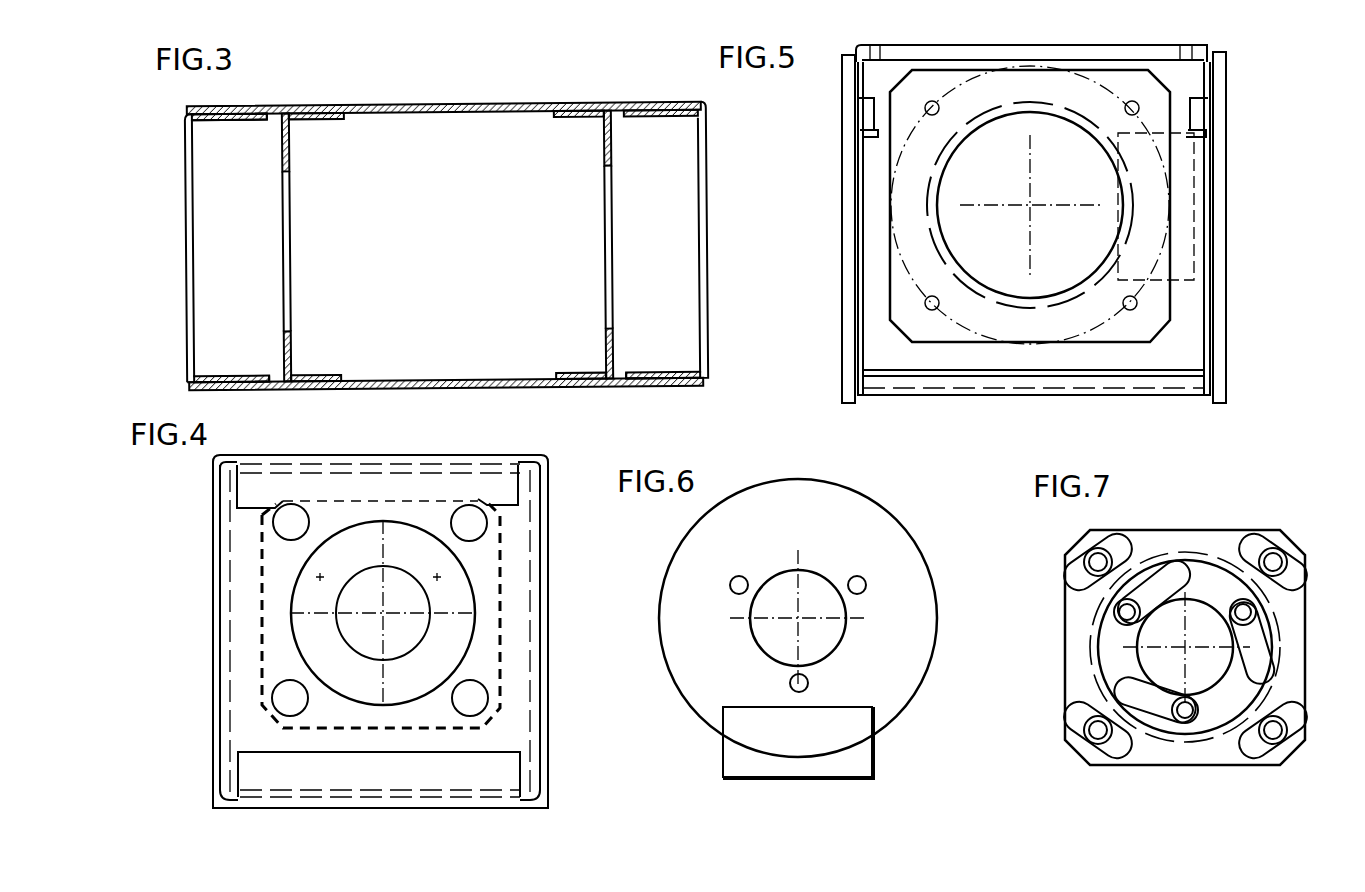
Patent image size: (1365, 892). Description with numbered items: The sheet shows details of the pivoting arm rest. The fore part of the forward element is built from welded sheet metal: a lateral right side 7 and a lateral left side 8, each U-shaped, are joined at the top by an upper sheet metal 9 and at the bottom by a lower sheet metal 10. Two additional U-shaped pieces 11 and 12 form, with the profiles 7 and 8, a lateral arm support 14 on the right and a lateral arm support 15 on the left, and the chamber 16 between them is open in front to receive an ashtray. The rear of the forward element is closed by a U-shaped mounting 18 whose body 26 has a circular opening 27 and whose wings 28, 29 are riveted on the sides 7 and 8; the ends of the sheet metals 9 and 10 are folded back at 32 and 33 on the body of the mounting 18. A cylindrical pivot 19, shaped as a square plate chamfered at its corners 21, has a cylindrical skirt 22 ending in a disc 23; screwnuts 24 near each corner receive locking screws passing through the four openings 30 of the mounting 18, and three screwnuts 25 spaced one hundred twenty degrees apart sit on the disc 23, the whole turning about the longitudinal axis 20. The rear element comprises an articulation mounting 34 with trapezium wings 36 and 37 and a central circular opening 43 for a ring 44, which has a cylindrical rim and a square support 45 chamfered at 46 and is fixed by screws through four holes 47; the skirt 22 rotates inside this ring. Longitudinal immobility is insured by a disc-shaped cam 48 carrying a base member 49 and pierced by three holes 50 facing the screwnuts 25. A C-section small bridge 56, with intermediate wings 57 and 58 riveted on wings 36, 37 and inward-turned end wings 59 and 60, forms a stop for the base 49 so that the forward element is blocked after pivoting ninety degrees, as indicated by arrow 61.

In FIG. 3, the lateral right side 7 is at (612, 148).
In FIG. 4, the lateral right side 7 is at (214, 650).
In FIG. 3, the lateral left side 8 is at (290, 152).
In FIG. 4, the lateral left side 8 is at (548, 604).
In FIG. 3, the upper sheet metal 9 is at (456, 104).
In FIG. 4, the upper sheet metal 9 is at (342, 462).
In FIG. 3, the lower sheet metal 10 is at (446, 372).
In FIG. 4, the lower sheet metal 10 is at (366, 808).
In FIG. 3, the additional welded sheet metal piece 11 is at (707, 174).
In FIG. 3, the additional welded sheet metal piece 12 is at (186, 205).
In FIG. 3, the lateral arm support 14 is at (641, 254).
In FIG. 3, the lateral arm support 15 is at (222, 257).
In FIG. 3, the chamber 16 is at (429, 257).
In FIG. 4, the U-shaped member (mounting) 18 is at (254, 700).
In FIG. 4, the cylindrical pivot 19 is at (502, 655).
In FIG. 7, the cylindrical pivot 19 is at (1190, 530).
In FIG. 4, the longitudinal axis 20 is at (383, 613).
In FIG. 5, the longitudinal axis 20 is at (1030, 205).
In FIG. 6, the longitudinal axis 20 is at (798, 618).
In FIG. 7, the longitudinal axis 20 is at (1185, 647).
In FIG. 7, the corners 21 is at (1066, 540).
In FIG. 7, the cylindrical skirt 22 is at (1157, 562).
In FIG. 7, the disc 23 is at (1112, 638).
In FIG. 7, the threaded insert or screw nut 24 is at (1276, 558).
In FIG. 7, the screwnuts 25 is at (1248, 614).
In FIG. 4, the body 26 is at (246, 545).
In FIG. 4, the circular opening 27 is at (292, 591).
In FIG. 4, the wing 28 is at (262, 690).
In FIG. 4, the wing 29 is at (534, 704).
In FIG. 4, the openings 30 is at (470, 530).
In FIG. 4, the folded-back end 32 is at (490, 480).
In FIG. 4, the folded-back end 33 is at (500, 770).
In FIG. 5, the articulation mounting 34 is at (1228, 356).
In FIG. 5, the wing 36 is at (1226, 259).
In FIG. 5, the wing 37 is at (842, 219).
In FIG. 5, the circular opening 43 is at (1032, 392).
In FIG. 5, the ring 44 is at (1066, 108).
In FIG. 5, the support 45 is at (938, 347).
In FIG. 5, the chamfer 46 is at (897, 342).
In FIG. 5, the holes 47 is at (1126, 113).
In FIG. 5, the cam 48 is at (1126, 316).
In FIG. 6, the cam 48 is at (906, 520).
In FIG. 5, the base member 49 is at (1190, 212).
In FIG. 6, the base member 49 is at (852, 745).
In FIG. 6, the holes 50 is at (744, 578).
In FIG. 5, the small bridge 56 is at (908, 46).
In FIG. 5, the intermediate wing 57 is at (1213, 92).
In FIG. 5, the intermediate wing 58 is at (860, 108).
In FIG. 5, the end wing 59 is at (1212, 120).
In FIG. 5, the end wing 60 is at (872, 136).
In FIG. 5, the arrow 61 is at (1060, 238).